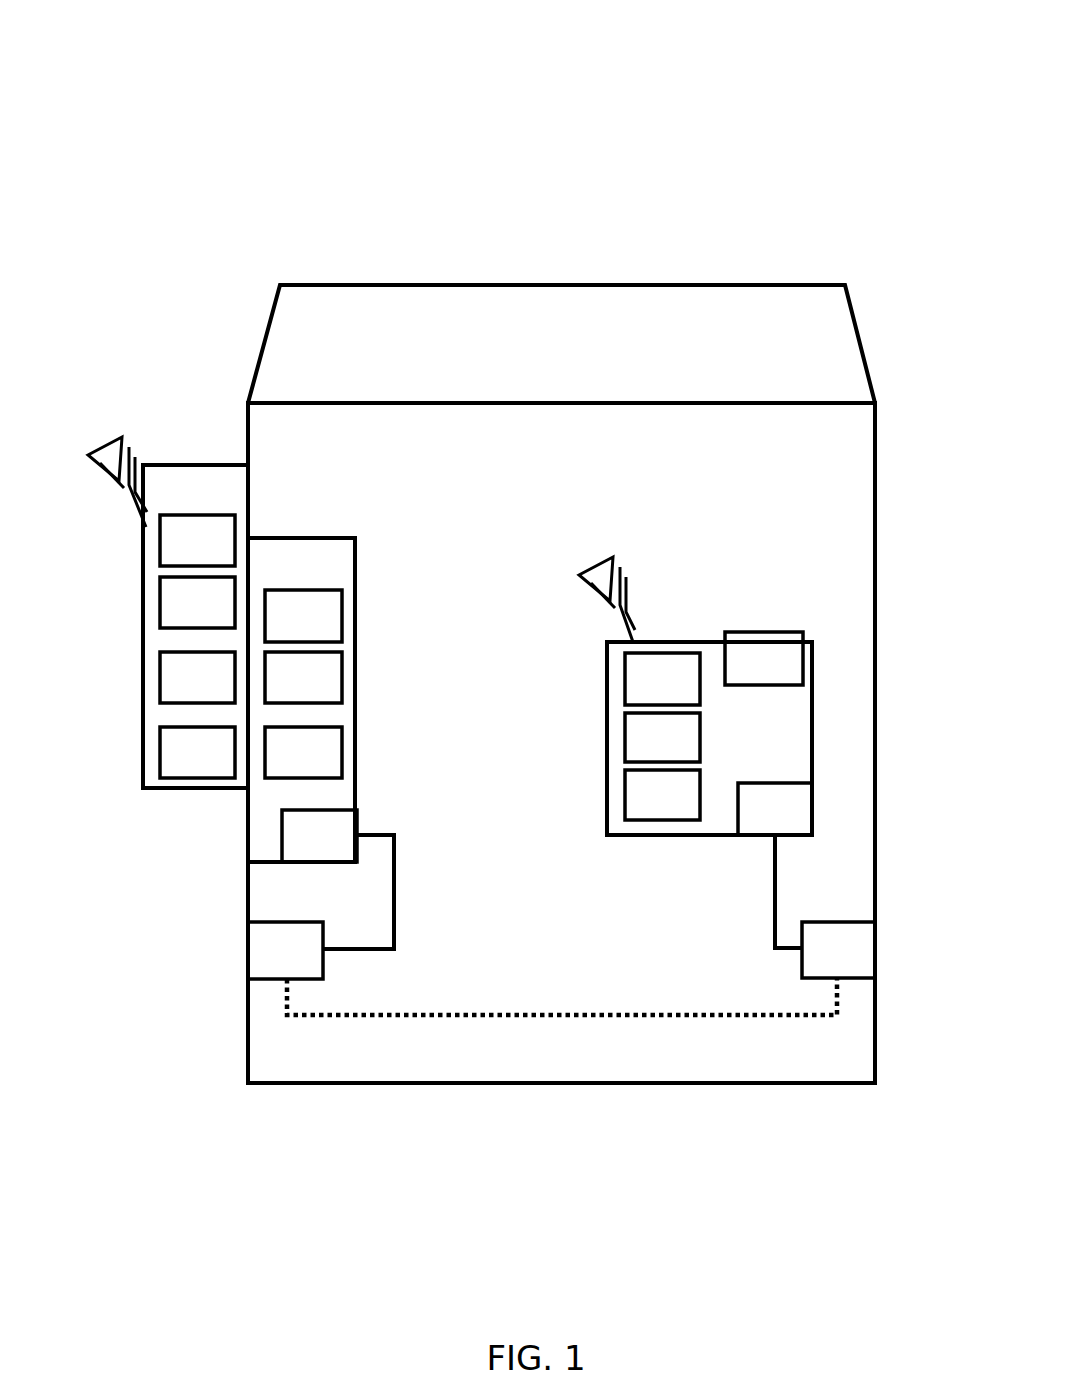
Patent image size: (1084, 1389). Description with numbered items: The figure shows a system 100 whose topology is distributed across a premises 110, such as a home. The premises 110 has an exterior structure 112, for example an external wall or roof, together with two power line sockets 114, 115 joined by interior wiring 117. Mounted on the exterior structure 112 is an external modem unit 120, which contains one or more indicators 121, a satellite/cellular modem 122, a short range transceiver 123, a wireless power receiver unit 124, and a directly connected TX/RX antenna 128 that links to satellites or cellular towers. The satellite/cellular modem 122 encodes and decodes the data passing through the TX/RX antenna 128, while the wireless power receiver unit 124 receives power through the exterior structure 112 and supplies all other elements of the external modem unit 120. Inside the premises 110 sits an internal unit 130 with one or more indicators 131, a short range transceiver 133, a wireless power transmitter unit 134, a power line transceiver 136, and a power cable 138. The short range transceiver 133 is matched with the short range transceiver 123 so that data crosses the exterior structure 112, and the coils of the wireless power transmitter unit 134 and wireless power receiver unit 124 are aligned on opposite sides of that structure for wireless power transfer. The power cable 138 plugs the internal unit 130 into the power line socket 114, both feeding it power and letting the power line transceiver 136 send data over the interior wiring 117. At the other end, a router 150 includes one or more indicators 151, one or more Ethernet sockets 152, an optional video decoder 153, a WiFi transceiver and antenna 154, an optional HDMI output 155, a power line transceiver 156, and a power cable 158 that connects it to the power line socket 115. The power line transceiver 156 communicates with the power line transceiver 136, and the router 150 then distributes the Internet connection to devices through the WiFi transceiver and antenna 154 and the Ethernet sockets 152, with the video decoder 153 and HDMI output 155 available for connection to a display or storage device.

The system 100 is at (864, 81).
The premises 110 is at (835, 310).
The exterior structure 112 is at (248, 890).
The power line socket 114 is at (265, 968).
The power line socket 115 is at (818, 966).
The interior wiring 117 is at (602, 1017).
The external modem unit 120 is at (177, 503).
The indicators 121 is at (177, 556).
The satellite/cellular modem 122 is at (177, 617).
The short range transceiver 123 is at (177, 693).
The wireless power receiver unit 124 is at (177, 768).
The TX/RX antenna 128 is at (97, 465).
The internal unit 130 is at (283, 576).
The indicators 131 is at (283, 633).
The short range transceiver 133 is at (283, 694).
The wireless power transmitter unit 134 is at (283, 768).
The power line transceiver 136 is at (298, 851).
The power cable 138 is at (394, 917).
The router 150 is at (756, 753).
The indicators 151 is at (643, 694).
The Ethernet sockets 152 is at (743, 674).
The video decoder 153 is at (643, 753).
The WiFi transceiver and antenna 154 is at (588, 580).
The HDMI output 155 is at (643, 809).
The power line transceiver 156 is at (755, 824).
The power cable 158 is at (775, 862).